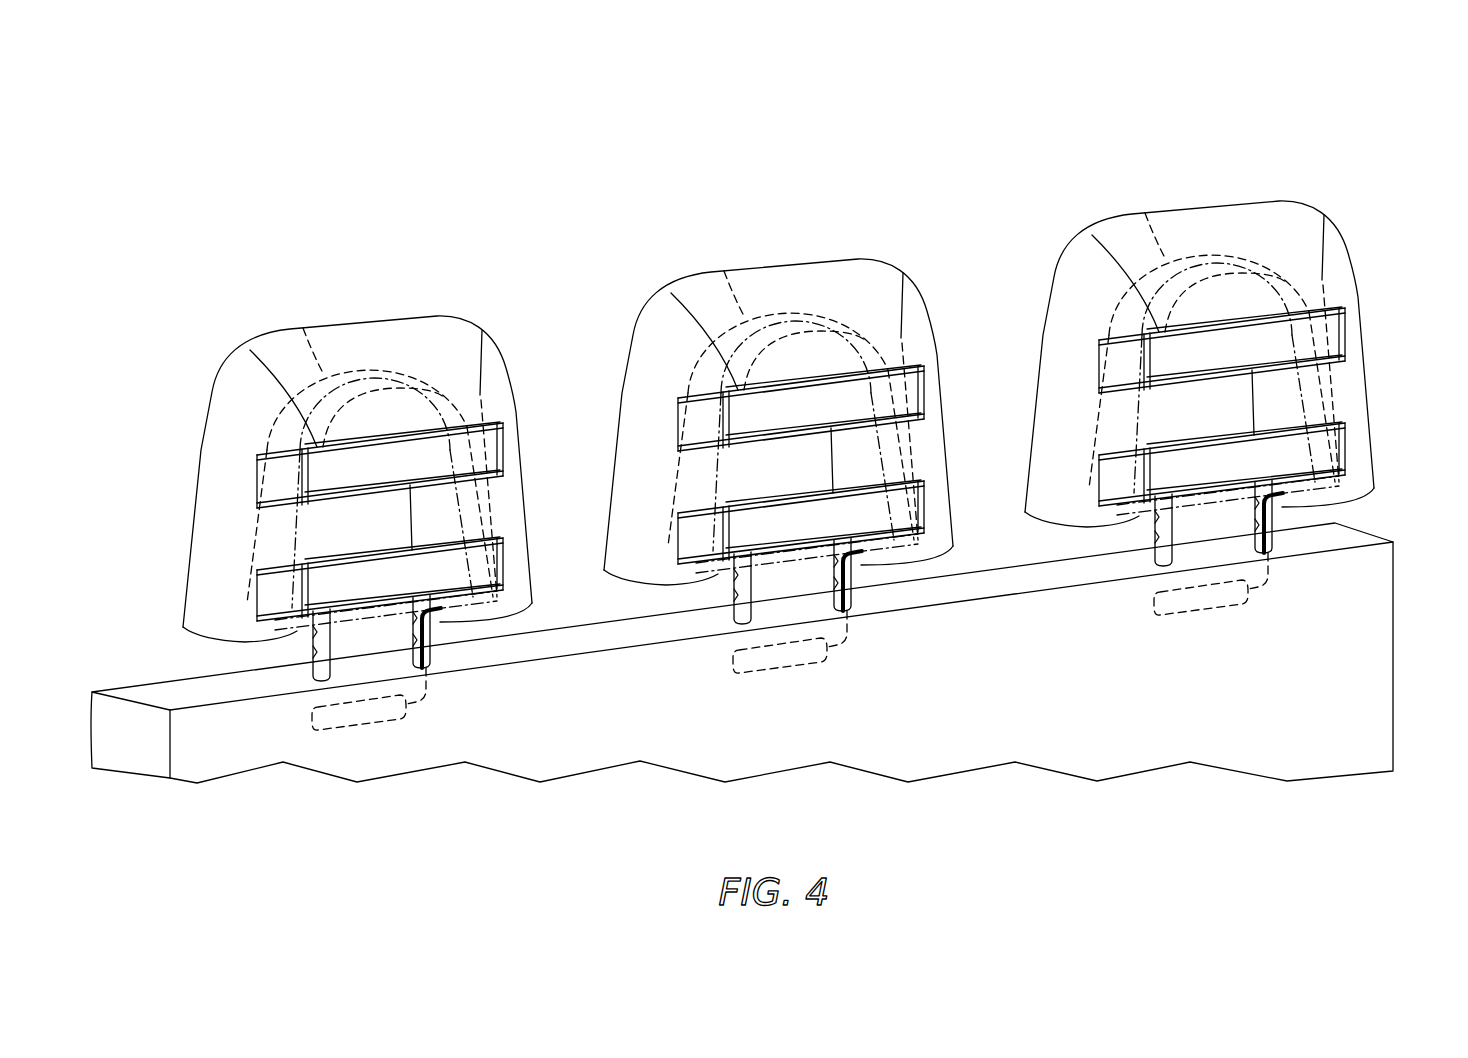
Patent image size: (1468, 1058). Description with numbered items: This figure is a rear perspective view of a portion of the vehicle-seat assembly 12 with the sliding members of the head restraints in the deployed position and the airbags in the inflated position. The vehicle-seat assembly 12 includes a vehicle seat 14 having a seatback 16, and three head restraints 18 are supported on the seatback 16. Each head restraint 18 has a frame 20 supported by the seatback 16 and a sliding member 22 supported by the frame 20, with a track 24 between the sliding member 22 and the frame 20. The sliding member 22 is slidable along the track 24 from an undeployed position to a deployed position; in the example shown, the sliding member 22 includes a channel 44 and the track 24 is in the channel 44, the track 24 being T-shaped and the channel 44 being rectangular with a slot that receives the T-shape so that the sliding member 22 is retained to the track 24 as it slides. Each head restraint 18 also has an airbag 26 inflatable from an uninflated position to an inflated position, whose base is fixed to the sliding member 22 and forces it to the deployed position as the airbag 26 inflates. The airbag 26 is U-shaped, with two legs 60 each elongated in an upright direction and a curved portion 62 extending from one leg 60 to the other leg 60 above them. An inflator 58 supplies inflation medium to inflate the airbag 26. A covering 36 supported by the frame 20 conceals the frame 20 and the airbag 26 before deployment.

The vehicle-seat assembly 12 is at (776, 653).
The vehicle seat 14 is at (1362, 612).
The seatback 16 is at (1350, 736).
The head restraint 18 is at (779, 369).
The frame 20 is at (699, 276).
The sliding member 22 is at (777, 460).
The track 24 is at (777, 460).
The airbag 26 is at (791, 363).
The covering 36 is at (848, 578).
The channel 44 is at (777, 464).
The inflator 58 is at (790, 684).
The legs 60 is at (776, 406).
The curved portion 62 is at (803, 367).